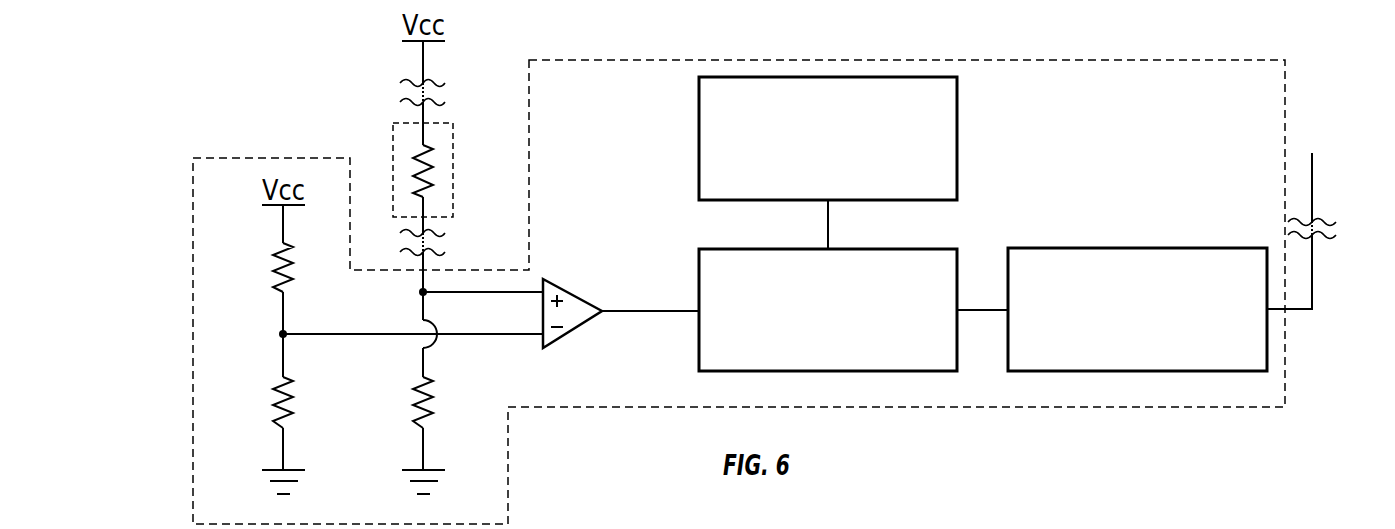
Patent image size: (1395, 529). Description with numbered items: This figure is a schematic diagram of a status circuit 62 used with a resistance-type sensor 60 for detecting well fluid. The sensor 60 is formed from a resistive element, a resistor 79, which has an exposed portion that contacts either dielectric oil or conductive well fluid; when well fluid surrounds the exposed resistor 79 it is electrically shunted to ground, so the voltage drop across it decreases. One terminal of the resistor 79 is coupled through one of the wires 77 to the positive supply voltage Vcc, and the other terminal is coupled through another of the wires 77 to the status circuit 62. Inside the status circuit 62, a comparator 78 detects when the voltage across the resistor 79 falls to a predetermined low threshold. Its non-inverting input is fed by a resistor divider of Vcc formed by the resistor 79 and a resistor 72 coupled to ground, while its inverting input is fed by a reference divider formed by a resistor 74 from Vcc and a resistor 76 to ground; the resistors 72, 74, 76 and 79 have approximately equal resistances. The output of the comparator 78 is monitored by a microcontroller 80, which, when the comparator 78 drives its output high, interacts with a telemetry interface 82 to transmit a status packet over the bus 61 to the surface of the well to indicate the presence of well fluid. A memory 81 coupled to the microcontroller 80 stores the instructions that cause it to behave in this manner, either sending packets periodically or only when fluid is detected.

The sensor 60 is at (455, 168).
The bus 61 is at (1320, 228).
The status circuit 62 is at (739, 269).
The resistor 72 is at (457, 398).
The resistor 74 is at (248, 276).
The resistor 76 is at (248, 402).
The wires 77 is at (451, 168).
The comparator 78 is at (588, 299).
The resistor 79 is at (457, 171).
The microcontroller 80 is at (829, 287).
The memory 81 is at (856, 138).
The telemetry interface 82 is at (1137, 287).